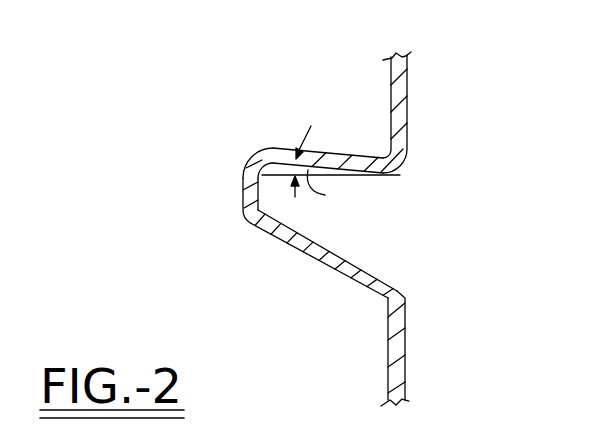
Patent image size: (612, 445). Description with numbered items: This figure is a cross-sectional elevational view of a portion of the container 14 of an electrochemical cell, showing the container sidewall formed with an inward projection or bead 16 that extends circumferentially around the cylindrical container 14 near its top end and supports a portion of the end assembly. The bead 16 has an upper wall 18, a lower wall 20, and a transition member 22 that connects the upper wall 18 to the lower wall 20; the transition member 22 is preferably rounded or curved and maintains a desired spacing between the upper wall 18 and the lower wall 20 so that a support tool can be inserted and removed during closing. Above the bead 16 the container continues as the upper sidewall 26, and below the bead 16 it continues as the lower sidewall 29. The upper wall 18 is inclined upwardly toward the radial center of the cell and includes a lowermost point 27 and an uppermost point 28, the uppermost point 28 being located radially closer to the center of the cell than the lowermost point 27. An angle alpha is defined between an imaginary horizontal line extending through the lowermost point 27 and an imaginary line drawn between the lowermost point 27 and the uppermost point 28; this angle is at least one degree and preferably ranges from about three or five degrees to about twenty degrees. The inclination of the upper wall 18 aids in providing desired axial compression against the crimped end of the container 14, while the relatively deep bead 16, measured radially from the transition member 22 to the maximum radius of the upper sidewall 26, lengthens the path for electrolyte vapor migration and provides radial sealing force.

The container 14 is at (407, 108).
The bead 16 is at (382, 226).
The upper wall 18 is at (343, 152).
The lower wall 20 is at (315, 260).
The transition member 22 is at (257, 153).
The upper sidewall 26 is at (407, 72).
The lowermost point 27 is at (381, 178).
The uppermost point 28 is at (243, 177).
The lower sidewall 29 is at (403, 348).